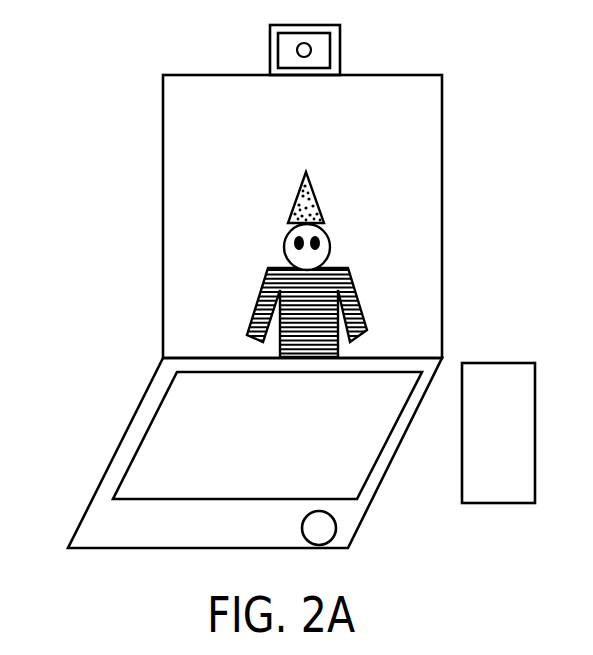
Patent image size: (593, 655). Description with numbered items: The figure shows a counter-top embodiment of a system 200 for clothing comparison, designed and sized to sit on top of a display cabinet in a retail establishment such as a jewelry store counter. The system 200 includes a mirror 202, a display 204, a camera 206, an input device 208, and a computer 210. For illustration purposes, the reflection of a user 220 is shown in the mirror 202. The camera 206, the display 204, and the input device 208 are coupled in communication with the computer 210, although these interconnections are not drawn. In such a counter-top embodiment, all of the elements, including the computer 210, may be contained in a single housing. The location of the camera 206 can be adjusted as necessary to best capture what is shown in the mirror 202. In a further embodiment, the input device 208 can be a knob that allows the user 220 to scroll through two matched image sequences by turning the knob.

The system 200 is at (82, 97).
The mirror 202 is at (443, 128).
The display 204 is at (125, 472).
The camera 206 is at (341, 44).
The input device 208 is at (336, 528).
The computer 210 is at (515, 362).
The user 220 is at (323, 215).